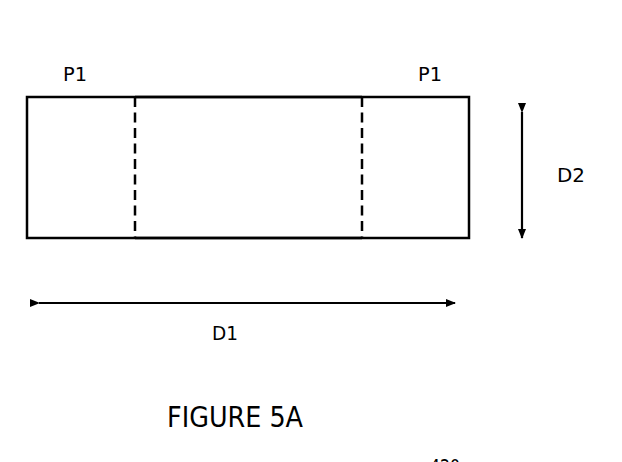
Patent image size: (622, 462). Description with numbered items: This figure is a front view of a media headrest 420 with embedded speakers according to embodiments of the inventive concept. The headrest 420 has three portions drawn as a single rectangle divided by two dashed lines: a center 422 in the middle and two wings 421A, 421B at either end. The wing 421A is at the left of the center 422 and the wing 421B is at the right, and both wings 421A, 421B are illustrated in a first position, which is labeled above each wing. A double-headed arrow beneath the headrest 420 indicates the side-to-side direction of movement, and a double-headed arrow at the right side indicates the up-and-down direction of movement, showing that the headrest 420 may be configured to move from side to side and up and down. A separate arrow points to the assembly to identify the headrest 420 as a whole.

The headrest 420 is at (492, 105).
The wing 421A is at (107, 226).
The wing 421B is at (440, 226).
The center 422 is at (280, 226).